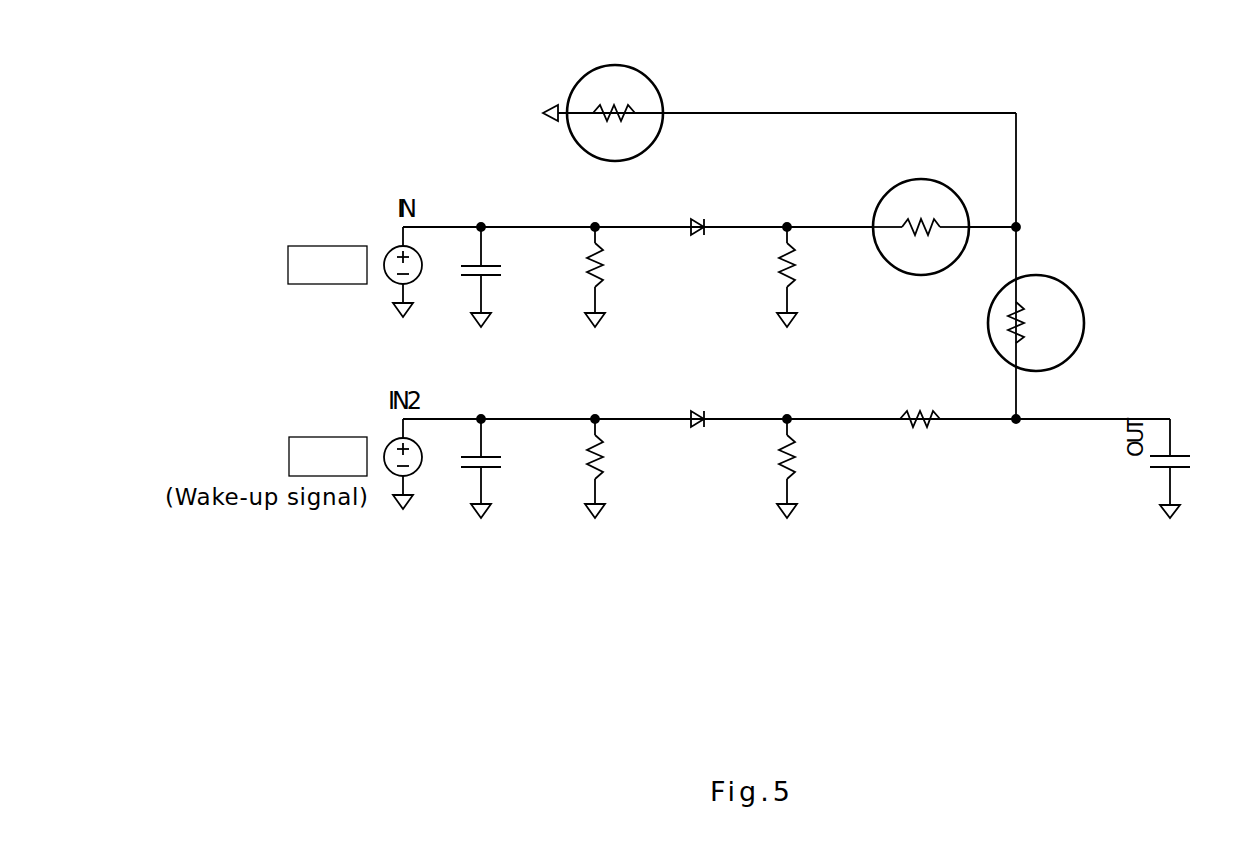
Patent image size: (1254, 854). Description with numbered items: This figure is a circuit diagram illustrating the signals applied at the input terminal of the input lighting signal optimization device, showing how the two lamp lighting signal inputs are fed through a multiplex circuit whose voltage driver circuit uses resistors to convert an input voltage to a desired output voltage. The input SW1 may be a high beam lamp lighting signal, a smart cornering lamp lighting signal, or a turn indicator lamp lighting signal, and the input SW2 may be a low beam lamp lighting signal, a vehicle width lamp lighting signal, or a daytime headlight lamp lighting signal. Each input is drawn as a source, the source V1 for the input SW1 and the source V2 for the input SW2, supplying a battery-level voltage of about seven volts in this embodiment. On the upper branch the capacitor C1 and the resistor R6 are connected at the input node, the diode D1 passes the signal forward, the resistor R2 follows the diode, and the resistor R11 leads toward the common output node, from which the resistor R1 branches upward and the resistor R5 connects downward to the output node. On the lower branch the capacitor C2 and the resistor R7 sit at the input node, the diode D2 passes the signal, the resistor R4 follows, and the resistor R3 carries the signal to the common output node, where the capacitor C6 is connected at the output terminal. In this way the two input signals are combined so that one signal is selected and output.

The input SW1 is at (327, 265).
The input SW2 is at (328, 456).
The first voltage source V1 is at (410, 270).
The second voltage source V2 is at (410, 462).
The capacitor C1 0.1μ C1 is at (504, 277).
The capacitor C2 0.1μ C2 is at (504, 468).
The output capacitor C6 6.8μ C6 is at (1192, 468).
The resistor R1 47K R1 is at (615, 113).
The resistor R2 6.8K R2 is at (815, 277).
The resistor R3 20K R3 is at (920, 420).
The resistor R4 6.8K R4 is at (815, 468).
The resistor R5 20K R5 is at (1036, 323).
The resistor R6 22K R6 is at (616, 277).
The resistor R7 22K R7 is at (616, 468).
The resistor R11 47K R11 is at (921, 227).
The diode D1 is at (699, 227).
The diode D2 is at (699, 418).